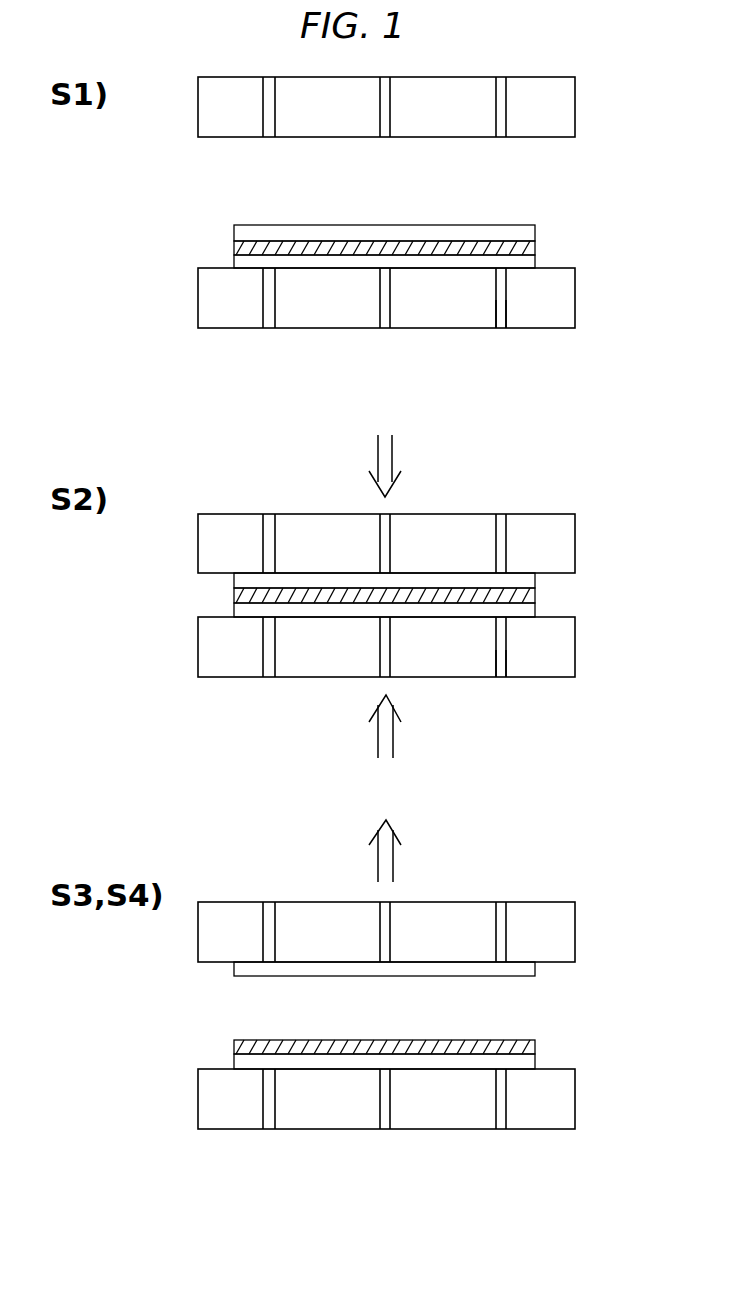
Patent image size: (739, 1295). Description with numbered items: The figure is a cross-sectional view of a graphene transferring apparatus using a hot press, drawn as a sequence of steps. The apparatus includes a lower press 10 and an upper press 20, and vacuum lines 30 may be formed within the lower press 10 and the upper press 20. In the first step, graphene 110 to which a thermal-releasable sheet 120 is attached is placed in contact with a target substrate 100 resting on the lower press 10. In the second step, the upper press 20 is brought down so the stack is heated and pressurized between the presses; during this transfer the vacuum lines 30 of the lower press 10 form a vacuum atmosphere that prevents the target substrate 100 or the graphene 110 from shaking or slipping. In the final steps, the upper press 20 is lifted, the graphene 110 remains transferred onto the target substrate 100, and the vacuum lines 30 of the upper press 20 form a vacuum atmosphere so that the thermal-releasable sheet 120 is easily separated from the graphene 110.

The lower press 10 is at (565, 302).
The upper press 20 is at (568, 108).
The vacuum lines 30 is at (501, 320).
The target substrate 100 is at (531, 262).
The graphene 110 is at (531, 247).
The thermal-releasable sheet 120 is at (531, 234).